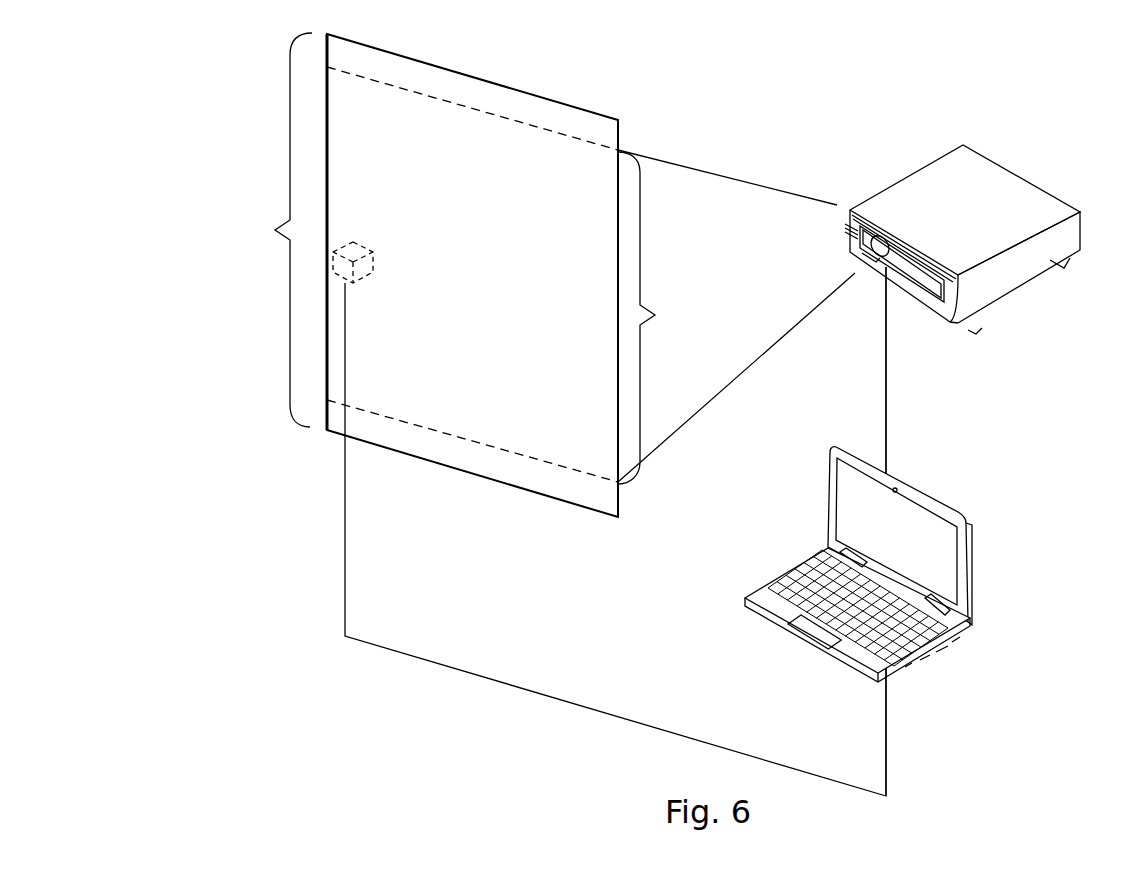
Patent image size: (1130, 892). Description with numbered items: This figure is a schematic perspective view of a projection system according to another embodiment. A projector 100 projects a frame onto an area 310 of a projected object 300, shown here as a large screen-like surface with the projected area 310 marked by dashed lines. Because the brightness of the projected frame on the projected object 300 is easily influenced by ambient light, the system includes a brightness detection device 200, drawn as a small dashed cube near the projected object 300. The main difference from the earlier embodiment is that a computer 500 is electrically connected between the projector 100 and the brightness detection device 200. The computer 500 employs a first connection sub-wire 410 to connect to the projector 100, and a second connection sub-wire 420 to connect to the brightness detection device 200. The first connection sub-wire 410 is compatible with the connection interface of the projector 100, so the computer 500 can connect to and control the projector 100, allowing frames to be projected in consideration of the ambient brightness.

The projector 100 is at (990, 153).
The brightness detection device 200 is at (333, 272).
The projected object 300 is at (525, 490).
The area 310 is at (640, 273).
The first connection sub-wire 410 is at (887, 353).
The second connection sub-wire 420 is at (522, 688).
The computer 500 is at (770, 621).